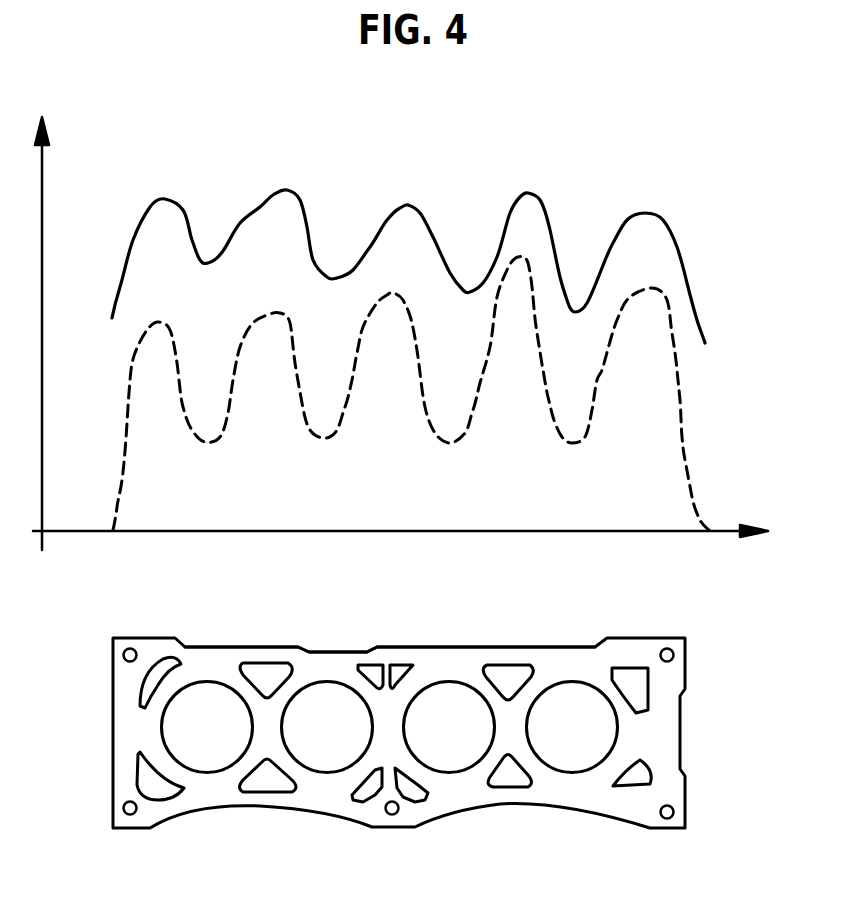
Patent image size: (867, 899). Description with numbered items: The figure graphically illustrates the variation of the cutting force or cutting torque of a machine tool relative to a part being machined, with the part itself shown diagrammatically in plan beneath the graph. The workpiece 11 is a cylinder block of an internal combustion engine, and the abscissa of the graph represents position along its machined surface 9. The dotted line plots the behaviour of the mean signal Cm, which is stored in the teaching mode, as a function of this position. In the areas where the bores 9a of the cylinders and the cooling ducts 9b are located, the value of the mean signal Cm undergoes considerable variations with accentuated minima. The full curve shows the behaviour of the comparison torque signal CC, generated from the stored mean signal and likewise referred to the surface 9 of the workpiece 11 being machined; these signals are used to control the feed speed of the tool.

The surface 9 is at (666, 678).
The bores of the cylinders 9a is at (205, 703).
The cooling ducts 9b is at (165, 670).
The workpiece 11 is at (478, 638).
The comparison torque signal CC is at (671, 223).
The mean signal Cm is at (683, 438).